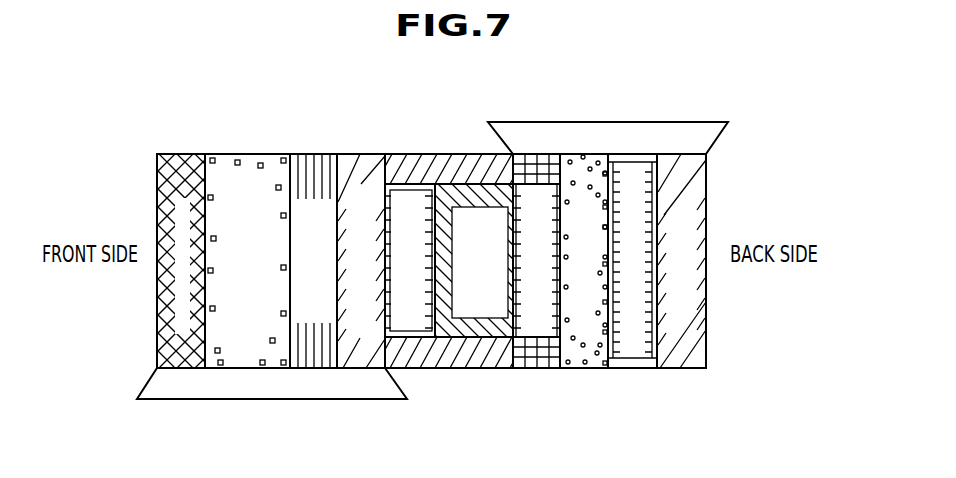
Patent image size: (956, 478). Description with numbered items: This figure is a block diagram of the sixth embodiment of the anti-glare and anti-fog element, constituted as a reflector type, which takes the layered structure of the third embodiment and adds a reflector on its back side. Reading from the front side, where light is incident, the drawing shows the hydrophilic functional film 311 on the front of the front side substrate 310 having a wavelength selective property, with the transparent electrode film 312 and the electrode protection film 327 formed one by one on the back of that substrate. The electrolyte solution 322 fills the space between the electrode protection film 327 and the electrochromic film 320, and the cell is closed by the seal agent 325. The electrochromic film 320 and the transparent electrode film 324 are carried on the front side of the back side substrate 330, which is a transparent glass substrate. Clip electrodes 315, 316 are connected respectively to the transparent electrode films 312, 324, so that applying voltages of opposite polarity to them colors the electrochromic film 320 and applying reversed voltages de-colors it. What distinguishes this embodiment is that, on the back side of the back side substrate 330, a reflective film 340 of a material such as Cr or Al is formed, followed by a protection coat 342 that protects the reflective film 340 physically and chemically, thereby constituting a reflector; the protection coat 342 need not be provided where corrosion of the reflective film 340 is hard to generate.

The substrate having a wavelength selection property 310 is at (247, 370).
The hydrophilic functional film 311 is at (190, 370).
The transparent electrode film 312 is at (318, 370).
The front side member 315 is at (150, 381).
The back side member 316 is at (716, 126).
The electrochromic film 320 is at (468, 190).
The electrolyte solution 322 is at (408, 195).
The transparent electrode film 324 is at (535, 362).
The electrochromic element sealing 325 is at (435, 362).
The electrode protection film 327 is at (365, 370).
The back side substrate 330 is at (615, 368).
The reflective film 340 is at (643, 358).
The protection coat 342 is at (687, 358).